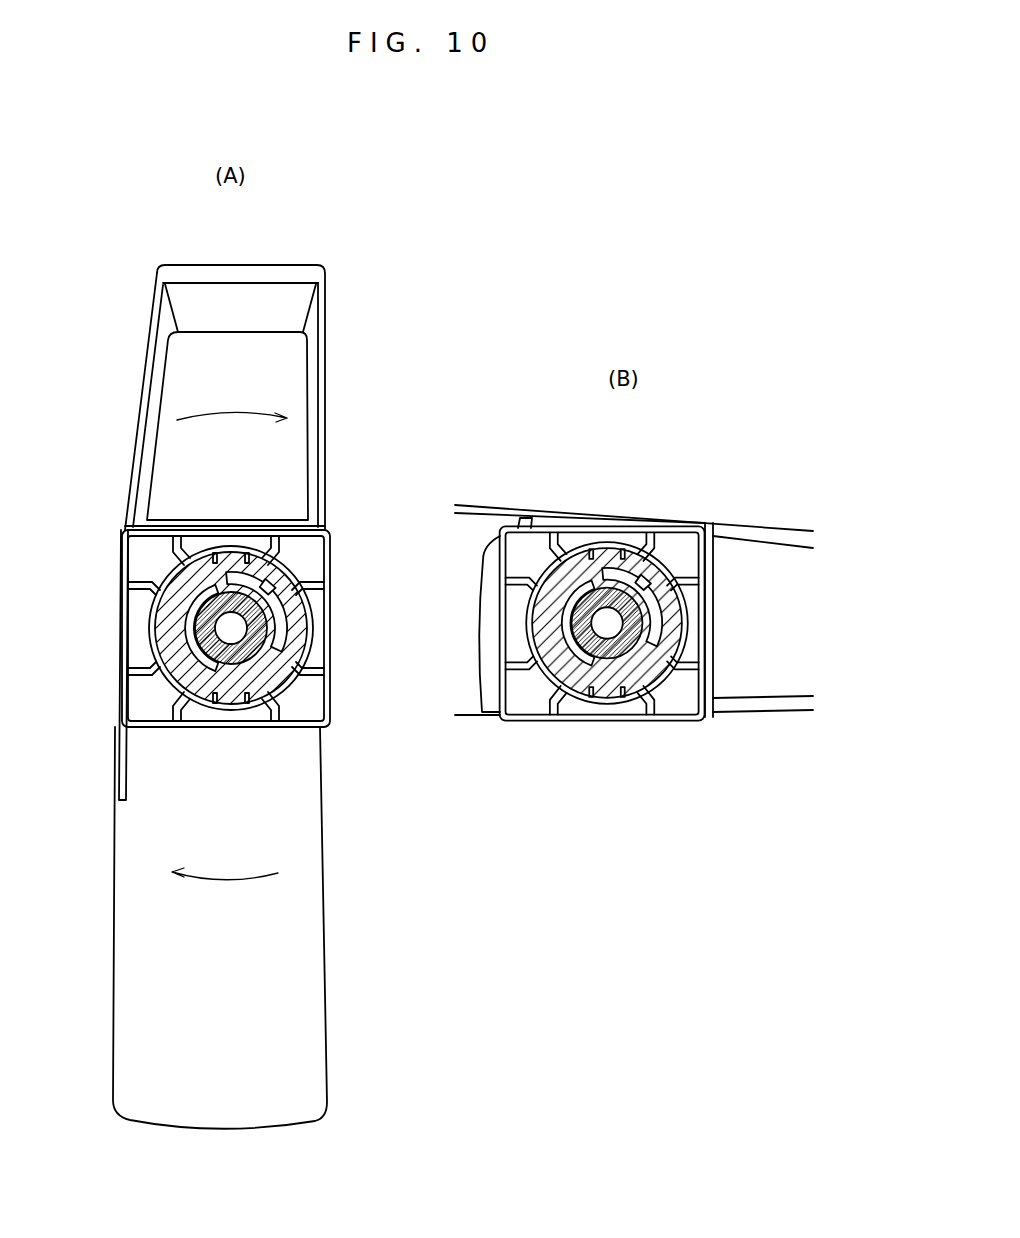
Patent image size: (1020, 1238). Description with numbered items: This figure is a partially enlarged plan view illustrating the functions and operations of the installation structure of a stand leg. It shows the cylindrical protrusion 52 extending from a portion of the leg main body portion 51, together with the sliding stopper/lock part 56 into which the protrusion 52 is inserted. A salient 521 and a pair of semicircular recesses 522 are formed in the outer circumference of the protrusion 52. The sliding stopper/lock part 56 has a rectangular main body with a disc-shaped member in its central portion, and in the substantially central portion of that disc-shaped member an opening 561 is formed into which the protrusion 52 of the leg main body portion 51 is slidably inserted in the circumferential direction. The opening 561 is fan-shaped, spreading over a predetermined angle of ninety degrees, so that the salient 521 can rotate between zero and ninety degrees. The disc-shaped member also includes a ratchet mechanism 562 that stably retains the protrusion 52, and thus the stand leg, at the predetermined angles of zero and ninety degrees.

The leg main body portion 51 is at (295, 837).
The protrusion 52 is at (222, 613).
The salient 521 is at (200, 647).
The semicircular recess 522 is at (237, 583).
The sliding stopper/lock part 56 is at (253, 728).
The opening 561 is at (188, 628).
The ratchet mechanism 562 is at (273, 600).